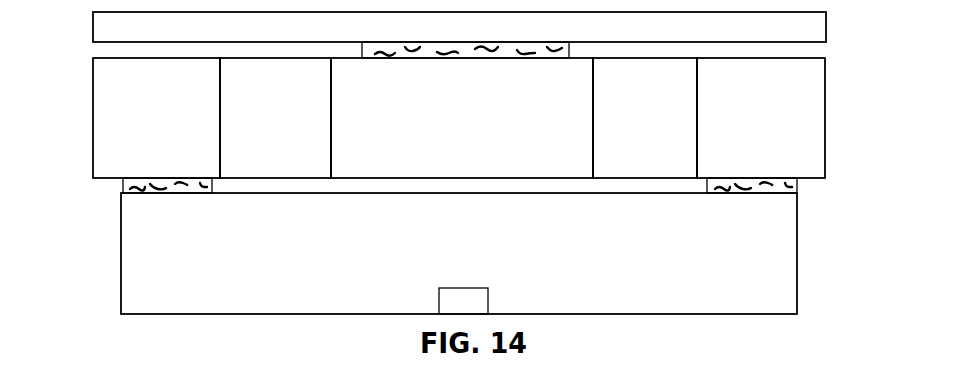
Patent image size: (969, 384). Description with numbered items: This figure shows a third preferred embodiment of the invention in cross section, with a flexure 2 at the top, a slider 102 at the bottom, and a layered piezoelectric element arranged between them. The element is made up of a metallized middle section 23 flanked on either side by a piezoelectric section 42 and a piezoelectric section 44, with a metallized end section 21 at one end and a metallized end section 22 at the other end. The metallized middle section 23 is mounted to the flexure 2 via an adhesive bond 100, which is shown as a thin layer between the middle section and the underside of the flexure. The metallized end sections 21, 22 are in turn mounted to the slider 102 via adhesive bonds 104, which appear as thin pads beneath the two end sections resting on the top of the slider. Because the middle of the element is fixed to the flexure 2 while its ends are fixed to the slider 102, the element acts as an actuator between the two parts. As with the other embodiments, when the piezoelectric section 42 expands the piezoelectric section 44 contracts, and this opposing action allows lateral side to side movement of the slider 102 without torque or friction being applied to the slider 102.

The flexure 2 is at (827, 32).
The adhesive bond 100 is at (533, 58).
The metallized end section 21 is at (97, 112).
The piezoelectric section 42 is at (260, 176).
The metallized middle section 23 is at (515, 178).
The piezoelectric section 44 is at (680, 99).
The metallized end section 22 is at (822, 167).
The adhesive bonds 104 is at (123, 189).
The slider 102 is at (797, 312).